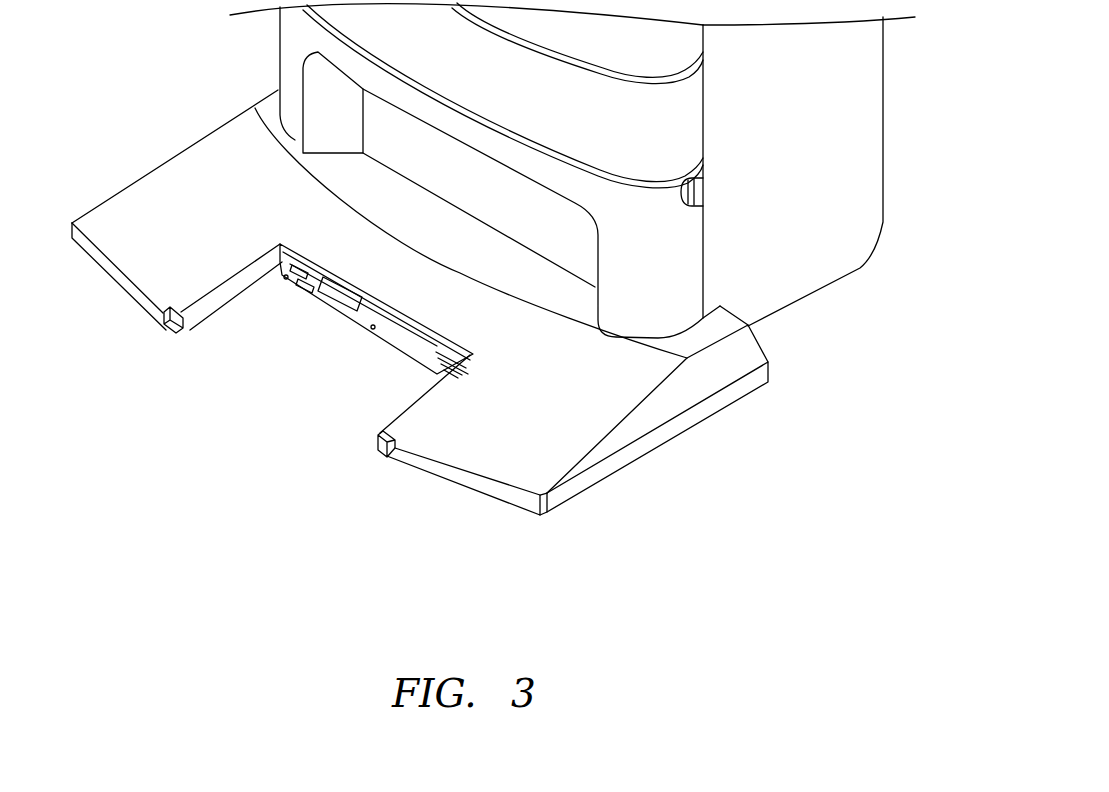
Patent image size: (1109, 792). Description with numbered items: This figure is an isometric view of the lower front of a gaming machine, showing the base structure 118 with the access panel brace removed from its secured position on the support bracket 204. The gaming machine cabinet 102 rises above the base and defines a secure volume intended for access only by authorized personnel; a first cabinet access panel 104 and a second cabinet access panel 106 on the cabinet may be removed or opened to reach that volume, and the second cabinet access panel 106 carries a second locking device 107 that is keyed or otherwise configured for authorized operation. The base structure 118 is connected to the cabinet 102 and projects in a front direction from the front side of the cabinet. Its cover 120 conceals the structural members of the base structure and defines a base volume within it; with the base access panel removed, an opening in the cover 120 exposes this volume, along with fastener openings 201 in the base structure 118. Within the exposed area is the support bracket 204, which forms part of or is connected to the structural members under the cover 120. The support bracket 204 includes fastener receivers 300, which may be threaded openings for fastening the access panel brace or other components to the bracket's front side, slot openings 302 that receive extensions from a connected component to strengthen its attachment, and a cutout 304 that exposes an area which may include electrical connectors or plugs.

The cabinet 102 is at (865, 83).
The first cabinet access panel 104 is at (667, 115).
The second cabinet access panel 106 is at (665, 252).
The second locking device 107 is at (705, 192).
The base structure 118 is at (138, 142).
The cover 120 is at (577, 423).
The fastener openings 201 is at (172, 333).
The support bracket 204 is at (375, 333).
The fastener receivers 300 is at (370, 337).
The slot openings 302 is at (311, 288).
The cutout 304 is at (347, 290).